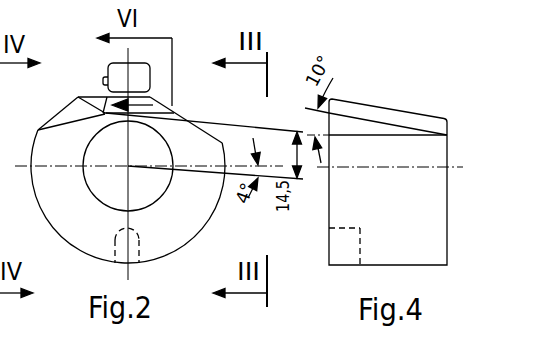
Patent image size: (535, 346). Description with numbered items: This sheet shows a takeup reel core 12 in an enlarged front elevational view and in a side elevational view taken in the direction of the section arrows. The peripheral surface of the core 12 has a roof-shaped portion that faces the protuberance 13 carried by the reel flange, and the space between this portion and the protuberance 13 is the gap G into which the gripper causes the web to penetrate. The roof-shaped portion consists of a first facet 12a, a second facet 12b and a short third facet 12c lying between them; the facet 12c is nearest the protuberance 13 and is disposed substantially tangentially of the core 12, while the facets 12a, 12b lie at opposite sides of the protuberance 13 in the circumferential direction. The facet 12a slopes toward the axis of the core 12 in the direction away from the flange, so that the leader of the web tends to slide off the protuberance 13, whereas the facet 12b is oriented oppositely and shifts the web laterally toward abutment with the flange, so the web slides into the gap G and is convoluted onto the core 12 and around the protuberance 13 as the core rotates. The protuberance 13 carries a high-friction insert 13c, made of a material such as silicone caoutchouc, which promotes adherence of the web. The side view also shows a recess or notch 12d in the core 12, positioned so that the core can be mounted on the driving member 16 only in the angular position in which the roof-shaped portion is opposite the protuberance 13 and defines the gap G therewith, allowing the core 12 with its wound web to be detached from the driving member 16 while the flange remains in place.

In FIG. 2, the core 12 is at (65, 221).
In FIG. 4, the core 12 is at (430, 233).
In FIG. 2, the first facet 12a is at (68, 113).
In FIG. 4, the first facet 12a is at (405, 116).
In FIG. 2, the second facet 12b is at (182, 118).
In FIG. 2, the third facet 12c is at (90, 287).
In FIG. 4, the notch 12d is at (343, 240).
In FIG. 2, the protuberance 13 is at (141, 72).
In FIG. 2, the insert 13c is at (105, 80).
In FIG. 2, the driving member 16 is at (152, 200).
In FIG. 2, the gap G is at (150, 92).